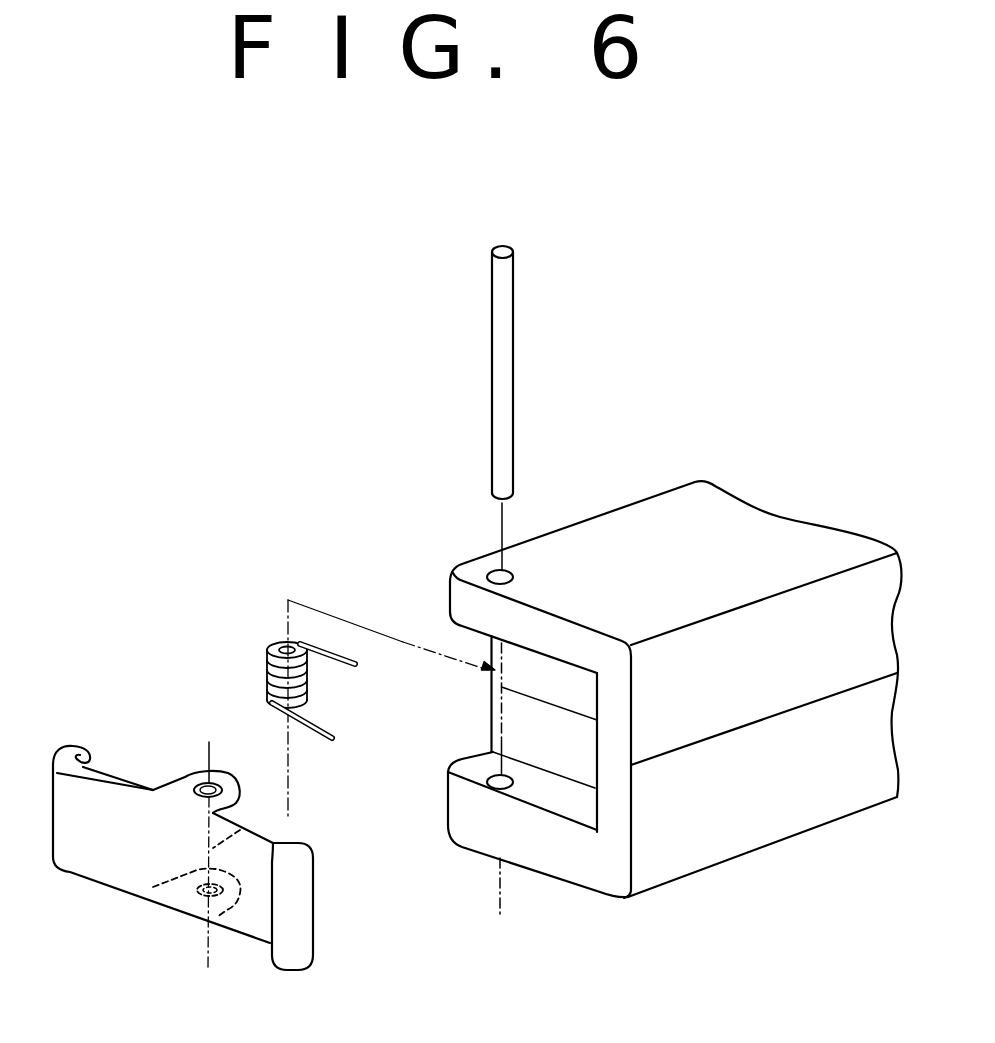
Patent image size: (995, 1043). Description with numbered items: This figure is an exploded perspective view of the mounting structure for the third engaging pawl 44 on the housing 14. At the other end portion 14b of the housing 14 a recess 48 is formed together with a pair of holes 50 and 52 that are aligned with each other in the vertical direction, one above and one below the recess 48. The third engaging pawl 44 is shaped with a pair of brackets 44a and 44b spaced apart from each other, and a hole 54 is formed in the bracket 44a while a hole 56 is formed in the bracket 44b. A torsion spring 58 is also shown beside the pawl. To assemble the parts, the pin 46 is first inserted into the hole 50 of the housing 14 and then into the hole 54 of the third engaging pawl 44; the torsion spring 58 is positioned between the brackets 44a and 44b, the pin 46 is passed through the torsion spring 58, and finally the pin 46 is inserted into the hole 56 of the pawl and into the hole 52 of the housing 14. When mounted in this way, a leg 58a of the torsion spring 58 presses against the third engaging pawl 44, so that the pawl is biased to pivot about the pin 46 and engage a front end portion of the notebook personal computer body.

The housing 14 is at (750, 824).
The other end portion of the housing 14b is at (552, 856).
The pin 46 is at (505, 293).
The recess 48 is at (523, 713).
The hole 50 is at (513, 574).
The hole 52 is at (485, 778).
The hole 54 is at (221, 781).
The hole 56 is at (156, 887).
The torsion spring 58 is at (270, 648).
The leg of the torsion spring 58a is at (327, 722).
The third engaging pawl 44 is at (305, 920).
The bracket 44a is at (185, 779).
The bracket 44b is at (237, 912).